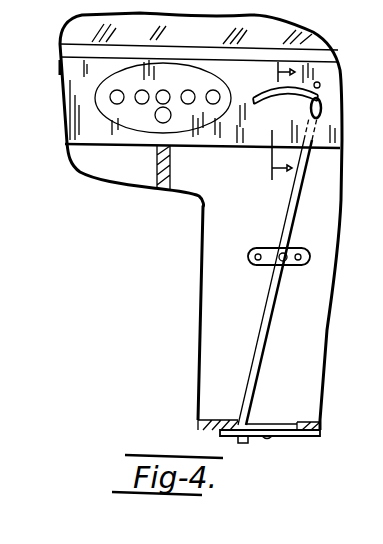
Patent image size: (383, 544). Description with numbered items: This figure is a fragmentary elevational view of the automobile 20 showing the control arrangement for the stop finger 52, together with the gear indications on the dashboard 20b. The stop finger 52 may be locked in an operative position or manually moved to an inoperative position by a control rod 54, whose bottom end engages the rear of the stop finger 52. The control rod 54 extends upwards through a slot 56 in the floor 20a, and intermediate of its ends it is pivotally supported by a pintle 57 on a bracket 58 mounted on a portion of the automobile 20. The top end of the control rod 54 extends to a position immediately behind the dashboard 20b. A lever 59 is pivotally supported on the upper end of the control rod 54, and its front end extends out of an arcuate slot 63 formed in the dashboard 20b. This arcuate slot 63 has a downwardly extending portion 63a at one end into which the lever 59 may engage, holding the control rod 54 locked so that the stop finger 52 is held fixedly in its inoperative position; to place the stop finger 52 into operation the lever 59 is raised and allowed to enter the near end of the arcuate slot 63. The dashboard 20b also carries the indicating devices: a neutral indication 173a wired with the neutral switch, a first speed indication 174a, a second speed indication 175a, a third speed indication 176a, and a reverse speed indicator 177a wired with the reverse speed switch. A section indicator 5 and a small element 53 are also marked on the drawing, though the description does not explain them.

The section line 5- 5 is at (272, 121).
The automobile 20 is at (203, 420).
The floor 20a is at (318, 422).
The dashboard 20b is at (63, 75).
The stop finger 52 is at (220, 430).
The base plate projection 53 is at (267, 438).
The control rod 54 is at (303, 170).
The slot 56 is at (272, 424).
The pintle 57 is at (292, 245).
The bracket 58 is at (258, 253).
The lever 59 is at (321, 114).
The arcuate slot 63 is at (333, 68).
The downwardly extending portion 63a is at (318, 97).
The neutral indication 173a is at (142, 90).
The first speed indication 174a is at (163, 90).
The second speed indication 175a is at (188, 90).
The third speed indication 176a is at (215, 88).
The reverse speed indicator 177a is at (112, 103).